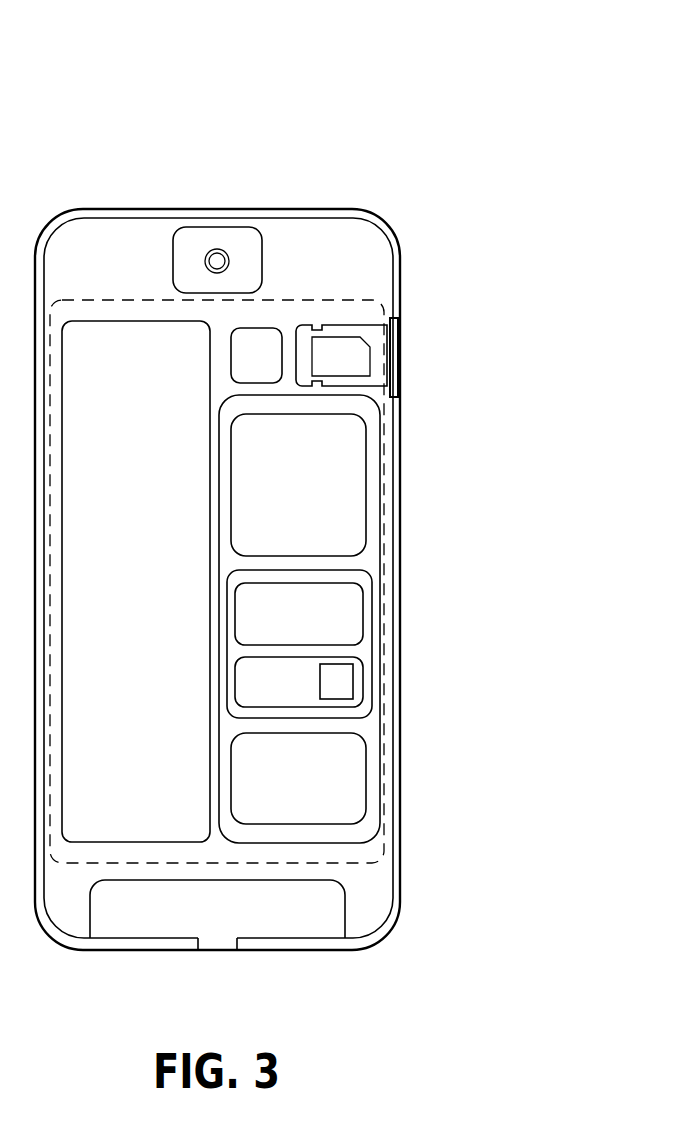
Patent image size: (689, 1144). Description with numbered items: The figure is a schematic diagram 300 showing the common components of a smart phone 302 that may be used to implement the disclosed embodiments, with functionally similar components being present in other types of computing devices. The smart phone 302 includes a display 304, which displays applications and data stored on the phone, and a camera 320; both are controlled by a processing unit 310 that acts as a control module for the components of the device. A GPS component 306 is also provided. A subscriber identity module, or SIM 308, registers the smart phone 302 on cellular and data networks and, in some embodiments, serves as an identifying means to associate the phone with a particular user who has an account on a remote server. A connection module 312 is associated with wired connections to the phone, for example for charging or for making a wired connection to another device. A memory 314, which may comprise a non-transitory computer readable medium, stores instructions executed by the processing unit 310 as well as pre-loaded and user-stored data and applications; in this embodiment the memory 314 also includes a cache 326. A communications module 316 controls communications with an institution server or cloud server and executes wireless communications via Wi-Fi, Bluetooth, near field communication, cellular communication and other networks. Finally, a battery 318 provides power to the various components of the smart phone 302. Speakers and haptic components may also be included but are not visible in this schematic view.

The schematic diagram 300 is at (330, 100).
The smart phone 302 is at (123, 210).
The display 304 is at (193, 863).
The GPS component 306 is at (263, 328).
The subscriber identity module (SIM) 308 is at (338, 325).
The processing unit 310 is at (325, 500).
The connection module 312 is at (325, 630).
The memory 314 is at (305, 695).
The communications module 316 is at (325, 790).
The battery 318 is at (160, 592).
The camera 320 is at (173, 254).
The cache 326 is at (353, 681).